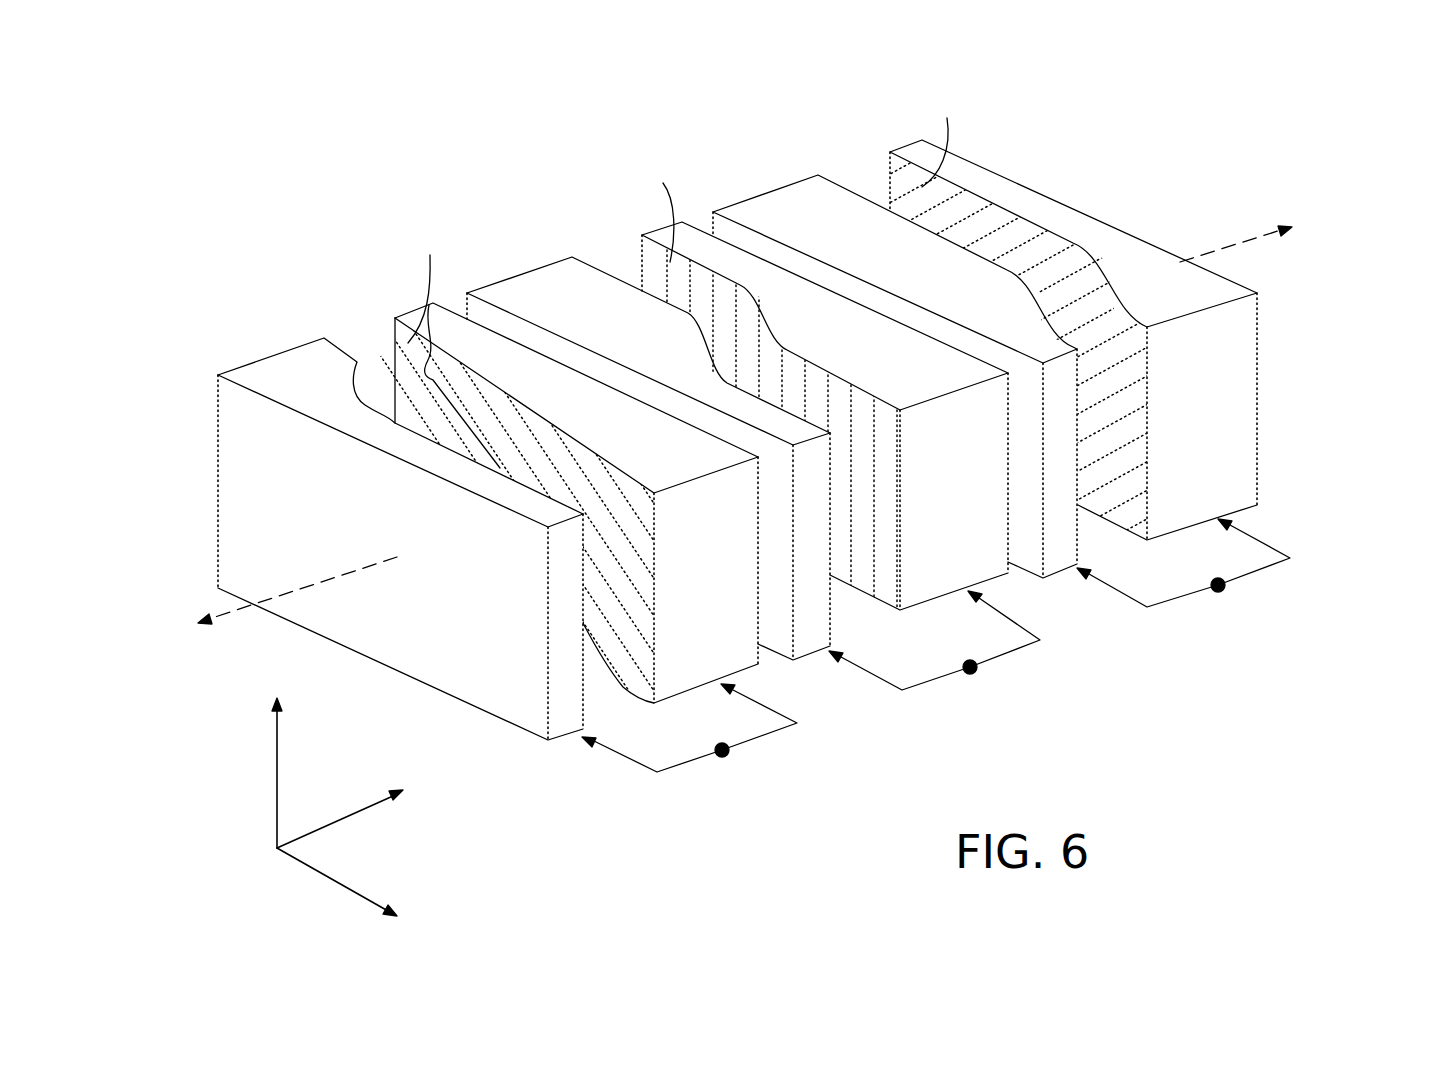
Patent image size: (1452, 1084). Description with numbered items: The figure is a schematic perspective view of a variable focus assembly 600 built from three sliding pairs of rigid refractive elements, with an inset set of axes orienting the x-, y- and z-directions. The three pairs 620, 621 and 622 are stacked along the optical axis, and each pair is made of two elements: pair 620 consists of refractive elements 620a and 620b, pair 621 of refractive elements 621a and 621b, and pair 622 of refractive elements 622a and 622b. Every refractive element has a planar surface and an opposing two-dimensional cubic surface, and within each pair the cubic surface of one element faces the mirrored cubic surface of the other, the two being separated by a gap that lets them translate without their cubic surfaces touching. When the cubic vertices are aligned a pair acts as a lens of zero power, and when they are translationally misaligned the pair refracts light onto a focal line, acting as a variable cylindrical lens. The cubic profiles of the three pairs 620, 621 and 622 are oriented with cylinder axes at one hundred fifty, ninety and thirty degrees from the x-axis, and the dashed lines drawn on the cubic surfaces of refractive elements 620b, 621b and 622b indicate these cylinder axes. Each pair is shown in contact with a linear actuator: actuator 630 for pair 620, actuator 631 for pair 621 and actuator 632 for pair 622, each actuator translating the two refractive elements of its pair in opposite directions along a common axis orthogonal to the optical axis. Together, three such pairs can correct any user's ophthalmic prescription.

The variable focus assembly 600 is at (310, 175).
The pair of refractive elements 620 is at (421, 298).
The refractive element 620a is at (495, 717).
The refractive element 620b is at (590, 520).
The pair of refractive elements 621 is at (668, 208).
The refractive element 621a is at (798, 658).
The refractive element 621b is at (825, 410).
The pair of refractive elements 622 is at (916, 122).
The refractive element 622a is at (1045, 580).
The refractive element 622b is at (726, 470).
The linear actuator 630 is at (725, 757).
The linear actuator 631 is at (973, 674).
The linear actuator 632 is at (1221, 592).